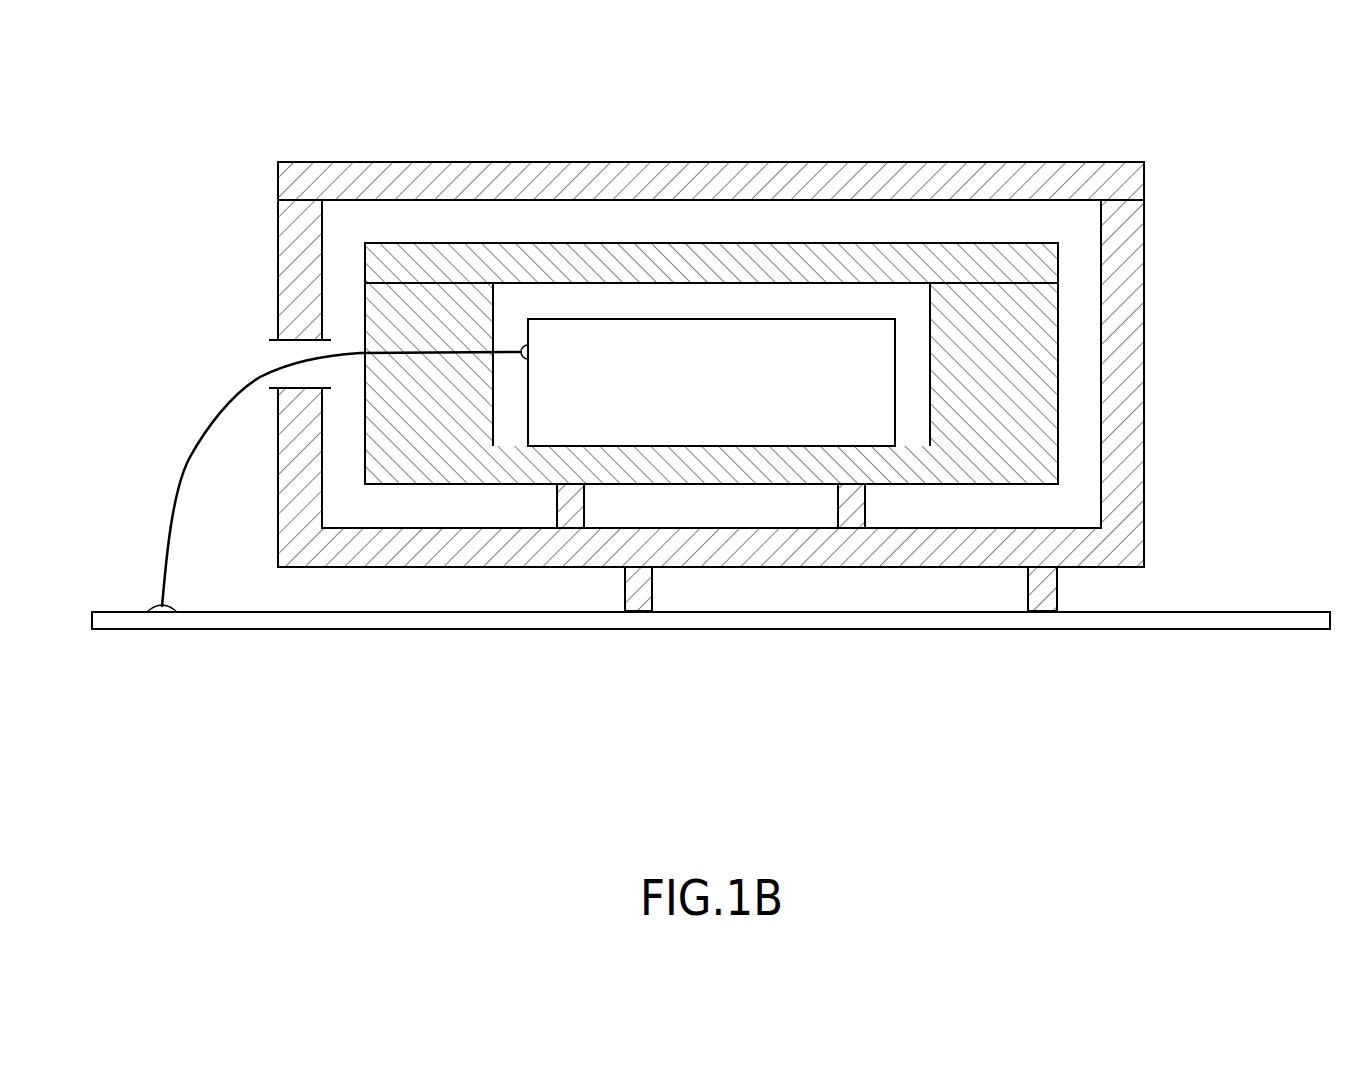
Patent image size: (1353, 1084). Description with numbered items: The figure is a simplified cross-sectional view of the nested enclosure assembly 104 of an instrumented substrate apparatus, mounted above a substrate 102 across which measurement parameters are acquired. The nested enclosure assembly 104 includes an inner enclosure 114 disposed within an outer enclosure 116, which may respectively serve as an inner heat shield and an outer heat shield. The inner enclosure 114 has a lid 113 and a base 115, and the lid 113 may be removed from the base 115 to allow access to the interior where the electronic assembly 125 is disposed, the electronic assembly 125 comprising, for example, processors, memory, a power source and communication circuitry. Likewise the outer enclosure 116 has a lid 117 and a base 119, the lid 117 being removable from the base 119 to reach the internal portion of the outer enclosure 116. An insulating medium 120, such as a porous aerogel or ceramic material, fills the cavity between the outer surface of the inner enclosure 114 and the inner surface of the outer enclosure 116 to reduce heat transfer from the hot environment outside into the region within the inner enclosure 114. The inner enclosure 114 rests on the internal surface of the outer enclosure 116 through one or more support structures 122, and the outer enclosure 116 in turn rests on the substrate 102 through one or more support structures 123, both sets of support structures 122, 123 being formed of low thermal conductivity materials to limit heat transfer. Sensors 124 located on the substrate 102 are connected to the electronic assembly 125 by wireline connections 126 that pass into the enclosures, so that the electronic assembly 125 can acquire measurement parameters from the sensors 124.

The substrate 102 is at (1248, 612).
The nested enclosure assembly 104 is at (654, 380).
The lid 113 is at (993, 258).
The inner enclosure 114 is at (1040, 328).
The base 115 is at (993, 475).
The outer enclosure 116 is at (753, 346).
The lid 117 is at (1060, 172).
The base 119 is at (1120, 503).
The insulating medium 120 is at (786, 321).
The support structures 122 is at (851, 505).
The support structures 123 is at (1043, 595).
The sensors 124 is at (155, 608).
The electronic assembly 125 is at (728, 398).
The wireline connections 126 is at (215, 410).